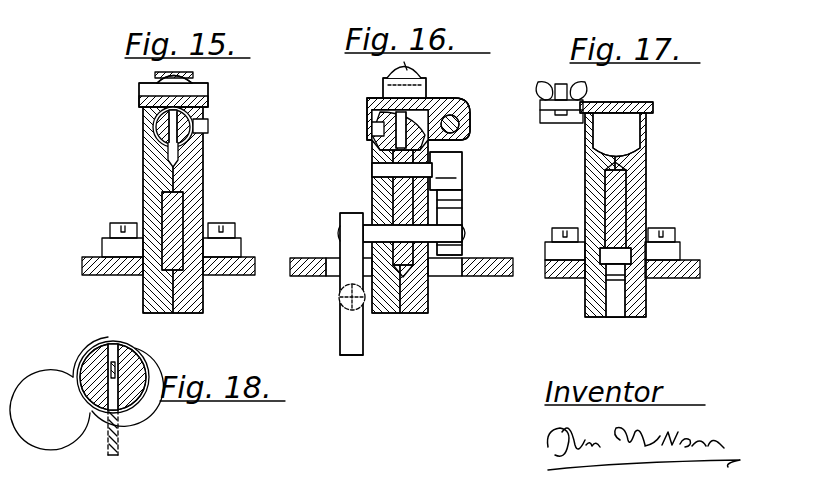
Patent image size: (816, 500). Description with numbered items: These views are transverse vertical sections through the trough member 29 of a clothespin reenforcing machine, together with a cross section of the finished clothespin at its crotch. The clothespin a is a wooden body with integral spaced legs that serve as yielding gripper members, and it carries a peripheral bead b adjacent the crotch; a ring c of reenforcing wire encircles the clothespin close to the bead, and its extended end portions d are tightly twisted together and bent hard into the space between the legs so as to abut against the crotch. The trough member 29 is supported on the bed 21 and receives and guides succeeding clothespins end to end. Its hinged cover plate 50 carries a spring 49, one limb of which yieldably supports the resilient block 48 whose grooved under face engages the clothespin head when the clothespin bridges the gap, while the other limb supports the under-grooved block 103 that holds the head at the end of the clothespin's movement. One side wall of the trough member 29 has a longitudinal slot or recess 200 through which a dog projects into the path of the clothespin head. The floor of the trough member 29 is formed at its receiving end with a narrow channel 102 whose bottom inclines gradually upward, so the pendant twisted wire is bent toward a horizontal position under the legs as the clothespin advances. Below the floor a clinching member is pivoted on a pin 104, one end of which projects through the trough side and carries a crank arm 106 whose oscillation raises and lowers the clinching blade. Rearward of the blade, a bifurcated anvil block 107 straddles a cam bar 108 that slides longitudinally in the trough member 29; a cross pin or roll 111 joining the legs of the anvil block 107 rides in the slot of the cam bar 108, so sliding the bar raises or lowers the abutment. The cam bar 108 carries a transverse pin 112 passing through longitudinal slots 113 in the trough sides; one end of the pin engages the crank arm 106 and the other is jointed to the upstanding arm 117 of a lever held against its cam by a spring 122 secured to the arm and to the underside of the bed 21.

In FIG. 15, the bed 21 is at (82, 264).
In FIG. 16, the bed 21 is at (300, 276).
In FIG. 17, the bed 21 is at (698, 278).
In FIG. 15, the trough member 29 is at (143, 205).
In FIG. 16, the trough member 29 is at (372, 157).
In FIG. 17, the trough member 29 is at (585, 152).
In FIG. 15, the resilient block 48 is at (195, 75).
In FIG. 15, the spring 49 is at (166, 76).
In FIG. 16, the spring 49 is at (392, 76).
In FIG. 15, the hinged cover plate 50 is at (160, 100).
In FIG. 16, the hinged cover plate 50 is at (440, 102).
In FIG. 17, the hinged cover plate 50 is at (650, 102).
In FIG. 15, the clothespin a is at (156, 127).
In FIG. 16, the clothespin a is at (372, 144).
In FIG. 18, the clothespin a is at (92, 374).
In FIG. 18, the peripheral bead b is at (145, 354).
In FIG. 18, the ring c is at (77, 392).
In FIG. 18, the extended end portions d is at (109, 345).
In FIG. 15, the channel 102 is at (170, 158).
In FIG. 16, the under-grooved block 103 is at (410, 82).
In FIG. 16, the pivot pin 104 is at (462, 172).
In FIG. 16, the crank arm 106 is at (462, 202).
In FIG. 17, the anvil block 107 is at (618, 148).
In FIG. 15, the cam bar 108 is at (165, 195).
In FIG. 16, the cam bar 108 is at (403, 262).
In FIG. 17, the cam bar 108 is at (630, 185).
In FIG. 17, the cross pin or roll 111 is at (620, 240).
In FIG. 16, the transverse pin 112 is at (338, 234).
In FIG. 16, the longitudinal slots 113 is at (372, 220).
In FIG. 16, the upstanding arm 117 is at (355, 357).
In FIG. 16, the spring 122 is at (362, 305).
In FIG. 15, the longitudinal slot or recess 200 is at (211, 126).
In FIG. 16, the longitudinal slot or recess 200 is at (368, 129).